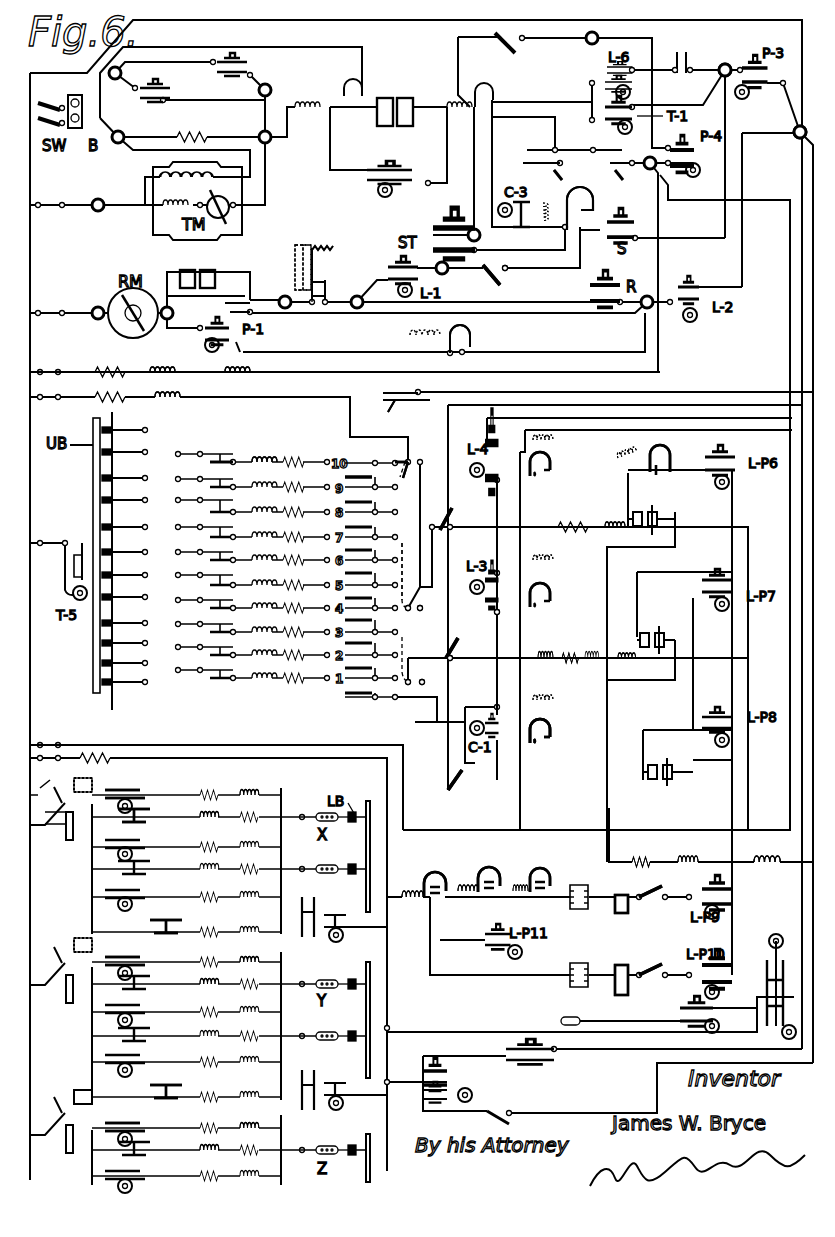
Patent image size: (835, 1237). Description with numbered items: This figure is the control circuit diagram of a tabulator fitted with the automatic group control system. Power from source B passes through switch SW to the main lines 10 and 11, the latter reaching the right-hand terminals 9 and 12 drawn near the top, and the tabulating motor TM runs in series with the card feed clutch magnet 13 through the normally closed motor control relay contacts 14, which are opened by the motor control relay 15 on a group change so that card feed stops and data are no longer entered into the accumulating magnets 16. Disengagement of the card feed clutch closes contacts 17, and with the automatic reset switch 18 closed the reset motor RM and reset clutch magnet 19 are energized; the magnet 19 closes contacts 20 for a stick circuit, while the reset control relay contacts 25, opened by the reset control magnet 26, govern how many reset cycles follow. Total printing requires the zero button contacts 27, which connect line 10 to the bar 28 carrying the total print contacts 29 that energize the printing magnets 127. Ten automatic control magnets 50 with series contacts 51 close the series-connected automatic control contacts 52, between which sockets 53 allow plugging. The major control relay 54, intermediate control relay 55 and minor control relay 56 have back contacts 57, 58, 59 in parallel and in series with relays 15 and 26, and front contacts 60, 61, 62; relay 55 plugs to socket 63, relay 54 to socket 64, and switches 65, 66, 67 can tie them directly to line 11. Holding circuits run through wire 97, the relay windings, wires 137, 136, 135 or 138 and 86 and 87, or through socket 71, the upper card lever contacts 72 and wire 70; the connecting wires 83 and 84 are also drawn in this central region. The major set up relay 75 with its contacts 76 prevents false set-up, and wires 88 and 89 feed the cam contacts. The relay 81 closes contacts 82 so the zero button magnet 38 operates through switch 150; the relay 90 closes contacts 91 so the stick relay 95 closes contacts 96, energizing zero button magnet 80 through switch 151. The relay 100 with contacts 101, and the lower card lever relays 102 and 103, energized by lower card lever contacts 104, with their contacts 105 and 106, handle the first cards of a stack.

The terminal 9 is at (727, 62).
The main line 10 is at (37, 712).
The main line 11 is at (405, 30).
The terminal 12 is at (795, 128).
The card feed clutch magnet 13 is at (380, 120).
The motor control relay contacts 14 is at (597, 198).
The motor control relay 15 is at (553, 228).
The accumulating magnets 16 is at (212, 817).
The contacts 17 is at (325, 284).
The automatic reset switch 18 is at (490, 287).
The reset clutch magnet 19 is at (216, 278).
The contacts 20 is at (222, 312).
The reset control relay contacts 25 is at (474, 344).
The reset control magnet 26 is at (408, 333).
The zero button contacts 27 is at (60, 786).
The bar 28 is at (95, 826).
The total print contacts 29 is at (130, 790).
The zero button magnet 38 is at (630, 912).
The automatic control magnets 50 is at (270, 455).
The series contacts 51 is at (230, 452).
The automatic control contacts 52 is at (358, 455).
The socket 53 is at (397, 537).
The major control relay 54 is at (622, 530).
The intermediate control relay 55 is at (635, 660).
The minor control relay 56 is at (618, 747).
The back contacts 57 is at (656, 511).
The back contacts 58 is at (661, 632).
The back contacts 59 is at (668, 770).
The front contacts 60 is at (638, 511).
The front contacts 61 is at (645, 632).
The front contacts 62 is at (653, 767).
The socket 63 is at (418, 680).
The socket 64 is at (408, 611).
The manually operated switch 65 is at (462, 782).
The manually operated switch 66 is at (457, 640).
The manually operated switch 67 is at (460, 527).
The wire 70 is at (672, 394).
The socket 71 is at (403, 460).
The upper card lever contacts 72 is at (375, 402).
The major set up relay 75 is at (620, 456).
The contacts 76 is at (668, 450).
The zero button magnet 80 is at (626, 968).
The relay 81 is at (520, 885).
The relay contacts 82 is at (545, 866).
The line 83 is at (692, 430).
The line 84 is at (512, 505).
The wire 86 is at (530, 688).
The wire 87 is at (521, 815).
The wire 88 is at (735, 760).
The wire 89 is at (743, 752).
The relay 90 is at (466, 900).
The relay contacts 91 is at (468, 872).
The stick relay 95 is at (410, 903).
The stick relay contacts 96 is at (412, 875).
The wire 97 is at (268, 745).
The relay 100 is at (182, 396).
The contacts 101 is at (540, 742).
The lower card lever relay 102 is at (167, 368).
The lower card lever relay 103 is at (253, 372).
The lower card lever contacts 104 is at (610, 160).
The contacts 105 is at (556, 596).
The contacts 106 is at (540, 476).
The printing magnets 127 is at (256, 809).
The wire 135 is at (435, 722).
The wire 136 is at (450, 665).
The wire 137 is at (499, 658).
The wire 138 is at (490, 612).
The switch 150 is at (645, 890).
The switch 151 is at (654, 978).